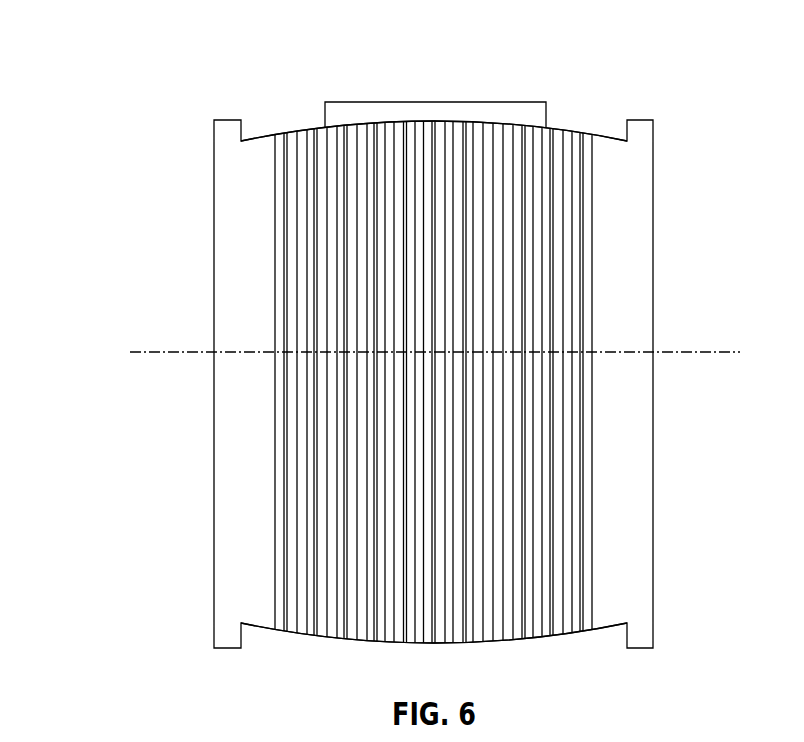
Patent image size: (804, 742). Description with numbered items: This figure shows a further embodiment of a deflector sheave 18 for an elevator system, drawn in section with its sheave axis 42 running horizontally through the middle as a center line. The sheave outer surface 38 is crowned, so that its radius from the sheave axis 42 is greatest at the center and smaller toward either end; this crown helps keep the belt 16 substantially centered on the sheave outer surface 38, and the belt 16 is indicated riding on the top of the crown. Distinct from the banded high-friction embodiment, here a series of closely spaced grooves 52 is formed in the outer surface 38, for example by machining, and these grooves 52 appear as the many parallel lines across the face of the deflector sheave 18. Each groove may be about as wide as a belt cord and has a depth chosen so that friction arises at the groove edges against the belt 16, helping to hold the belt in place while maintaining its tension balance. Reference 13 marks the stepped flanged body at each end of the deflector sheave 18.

The deflector sheave 18 is at (138, 44).
The housing 13 is at (230, 172).
The belt 16 is at (355, 100).
The sheave outer surface 38 is at (268, 133).
The grooves 52 is at (340, 195).
The sheave axis 42 is at (177, 353).